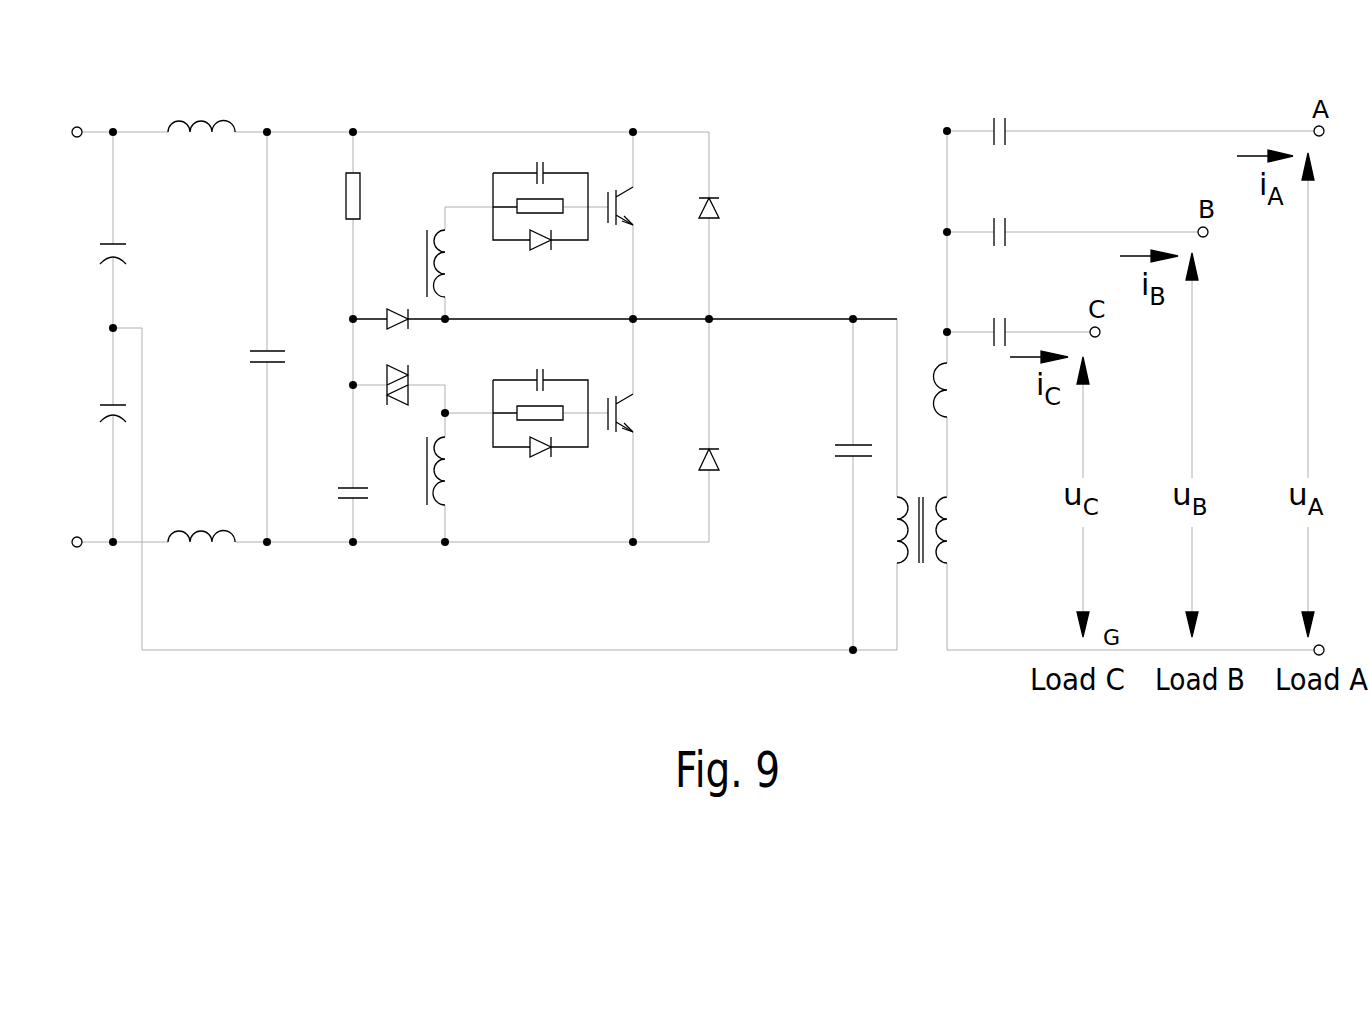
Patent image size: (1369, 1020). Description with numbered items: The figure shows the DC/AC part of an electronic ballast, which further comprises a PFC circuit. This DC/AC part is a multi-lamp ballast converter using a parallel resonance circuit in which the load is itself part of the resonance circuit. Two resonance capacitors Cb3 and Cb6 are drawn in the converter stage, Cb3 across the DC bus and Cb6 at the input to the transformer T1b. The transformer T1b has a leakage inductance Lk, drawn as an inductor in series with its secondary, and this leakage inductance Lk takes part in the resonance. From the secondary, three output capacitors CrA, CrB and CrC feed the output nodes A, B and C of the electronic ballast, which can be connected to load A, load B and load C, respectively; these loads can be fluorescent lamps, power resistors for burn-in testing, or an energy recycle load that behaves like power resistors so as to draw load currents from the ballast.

The resonance capacitor Cb3 is at (245, 337).
The resonance capacitor Cb6 is at (842, 484).
The transformer T1b is at (922, 503).
The leakage inductance Lk is at (932, 314).
The output capacitor CrA is at (1130, 114).
The output capacitor CrB is at (1072, 215).
The output capacitor CrC is at (1018, 315).